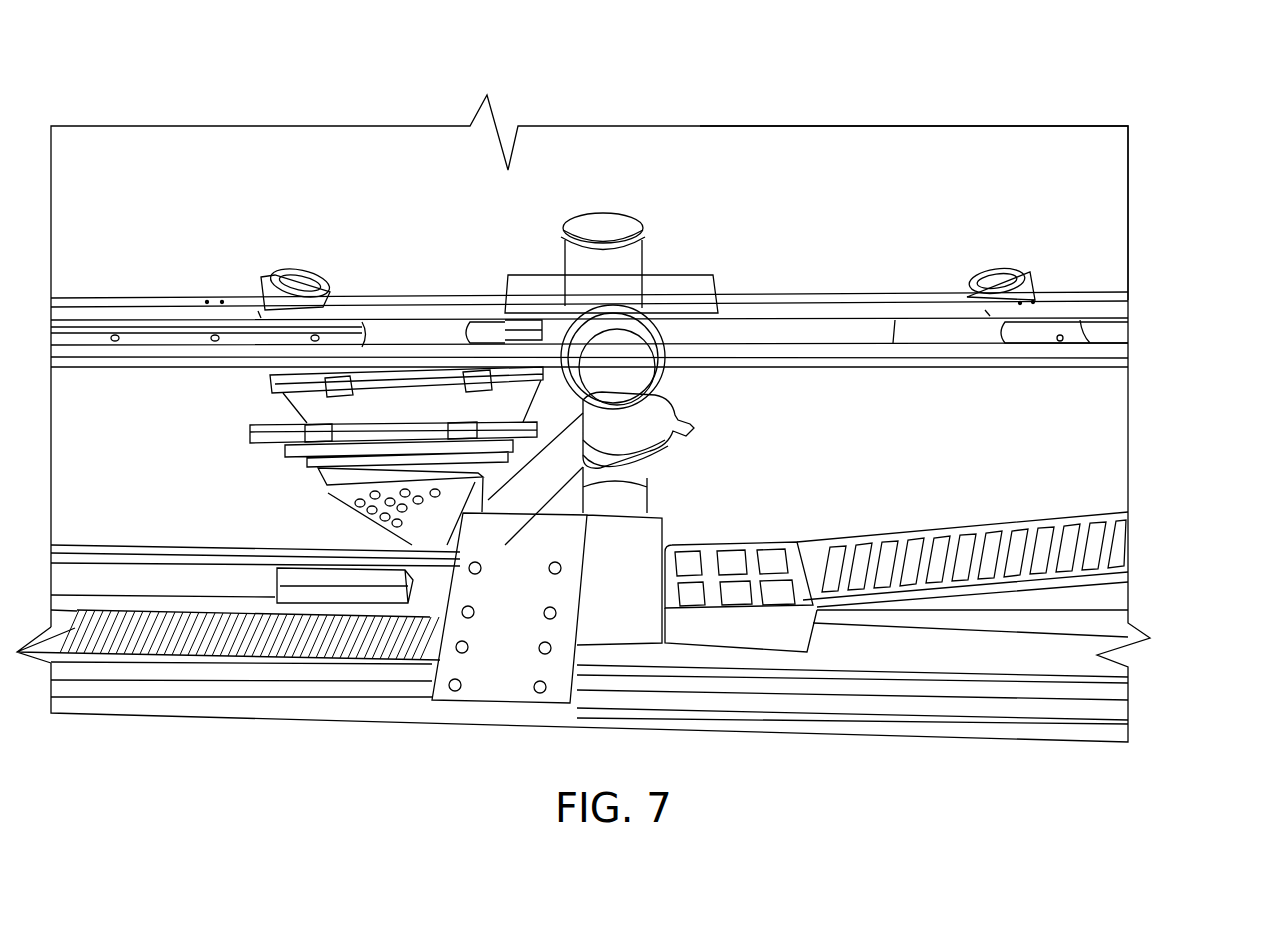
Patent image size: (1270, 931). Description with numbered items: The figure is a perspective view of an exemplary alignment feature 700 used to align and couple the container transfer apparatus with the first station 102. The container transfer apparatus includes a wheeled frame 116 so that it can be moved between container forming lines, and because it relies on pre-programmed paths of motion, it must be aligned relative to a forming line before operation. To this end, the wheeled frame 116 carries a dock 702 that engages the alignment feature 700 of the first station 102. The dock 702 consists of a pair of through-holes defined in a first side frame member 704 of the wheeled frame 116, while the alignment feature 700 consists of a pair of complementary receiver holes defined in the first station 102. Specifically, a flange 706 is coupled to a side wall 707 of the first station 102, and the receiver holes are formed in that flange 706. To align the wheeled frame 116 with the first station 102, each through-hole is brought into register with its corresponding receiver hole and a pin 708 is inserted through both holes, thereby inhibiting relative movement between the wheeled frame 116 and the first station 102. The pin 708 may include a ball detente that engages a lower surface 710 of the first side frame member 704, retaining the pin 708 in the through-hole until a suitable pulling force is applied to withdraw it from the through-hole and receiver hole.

The first station 102 is at (592, 174).
The wheeled frame 116 is at (1047, 710).
The alignment feature 700 is at (951, 290).
The dock 702 is at (978, 332).
The first side frame member 704 is at (1115, 314).
The flange 706 is at (822, 300).
The side wall 707 is at (1068, 157).
The pin 708 is at (247, 268).
The lower surface 710 is at (1080, 336).